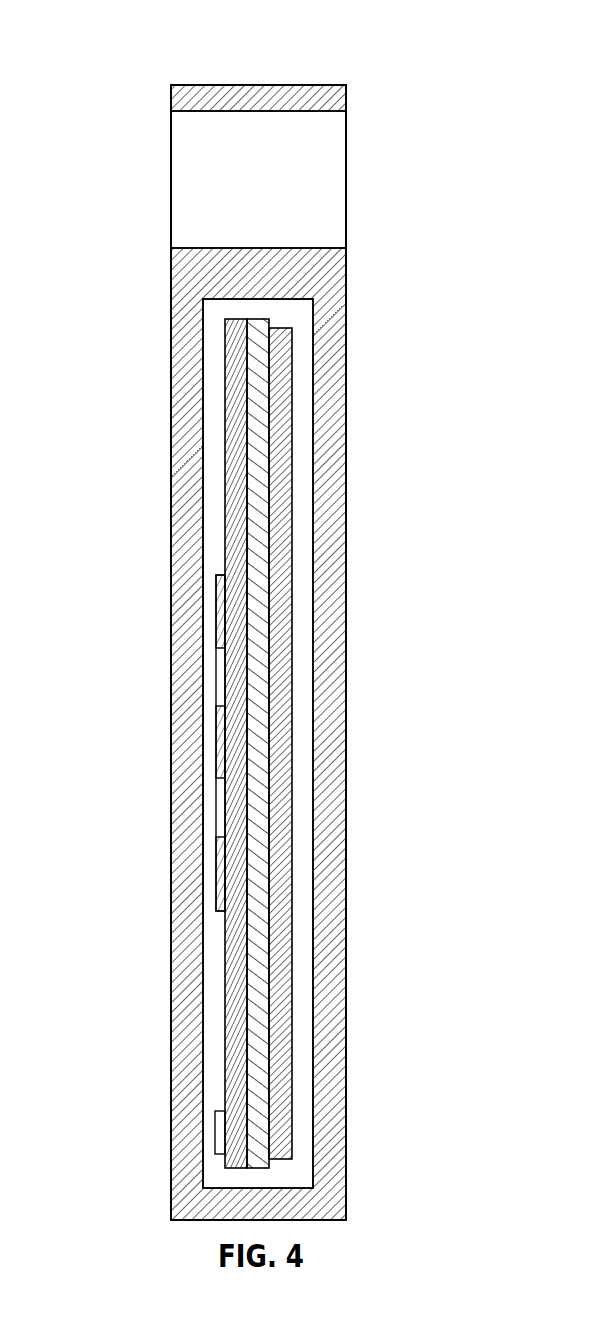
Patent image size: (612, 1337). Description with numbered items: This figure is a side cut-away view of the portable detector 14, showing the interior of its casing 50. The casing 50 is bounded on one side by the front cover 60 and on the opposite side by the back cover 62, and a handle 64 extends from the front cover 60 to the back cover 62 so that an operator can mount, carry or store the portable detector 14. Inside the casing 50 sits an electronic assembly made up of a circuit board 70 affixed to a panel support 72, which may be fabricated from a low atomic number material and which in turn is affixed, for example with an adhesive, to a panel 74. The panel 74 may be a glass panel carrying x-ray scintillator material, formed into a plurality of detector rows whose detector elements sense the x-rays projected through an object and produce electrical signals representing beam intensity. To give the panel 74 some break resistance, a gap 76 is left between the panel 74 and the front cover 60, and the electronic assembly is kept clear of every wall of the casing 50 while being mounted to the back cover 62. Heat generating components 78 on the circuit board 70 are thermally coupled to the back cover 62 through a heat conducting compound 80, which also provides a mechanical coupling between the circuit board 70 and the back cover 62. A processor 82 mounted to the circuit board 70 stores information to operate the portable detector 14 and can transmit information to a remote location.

The portable detector 14 is at (146, 155).
The casing 50 is at (237, 85).
The front cover 60 is at (347, 572).
The back cover 62 is at (170, 462).
The handle 64 is at (170, 235).
The circuit board 70 is at (232, 390).
The panel support 72 is at (258, 323).
The panel 74 is at (290, 352).
The gap 76 is at (303, 500).
The heat generating components 78 is at (214, 608).
The heat conducting compound 80 is at (213, 633).
The processor 82 is at (222, 1139).